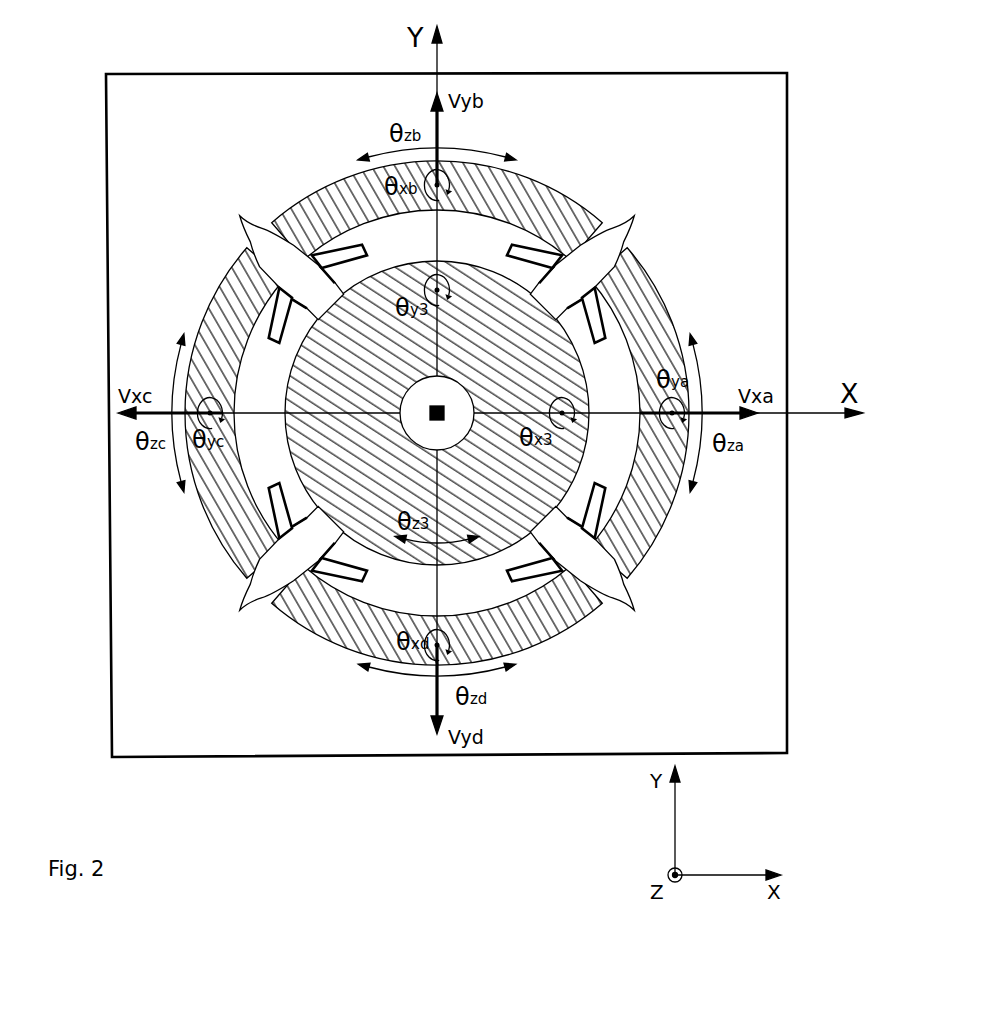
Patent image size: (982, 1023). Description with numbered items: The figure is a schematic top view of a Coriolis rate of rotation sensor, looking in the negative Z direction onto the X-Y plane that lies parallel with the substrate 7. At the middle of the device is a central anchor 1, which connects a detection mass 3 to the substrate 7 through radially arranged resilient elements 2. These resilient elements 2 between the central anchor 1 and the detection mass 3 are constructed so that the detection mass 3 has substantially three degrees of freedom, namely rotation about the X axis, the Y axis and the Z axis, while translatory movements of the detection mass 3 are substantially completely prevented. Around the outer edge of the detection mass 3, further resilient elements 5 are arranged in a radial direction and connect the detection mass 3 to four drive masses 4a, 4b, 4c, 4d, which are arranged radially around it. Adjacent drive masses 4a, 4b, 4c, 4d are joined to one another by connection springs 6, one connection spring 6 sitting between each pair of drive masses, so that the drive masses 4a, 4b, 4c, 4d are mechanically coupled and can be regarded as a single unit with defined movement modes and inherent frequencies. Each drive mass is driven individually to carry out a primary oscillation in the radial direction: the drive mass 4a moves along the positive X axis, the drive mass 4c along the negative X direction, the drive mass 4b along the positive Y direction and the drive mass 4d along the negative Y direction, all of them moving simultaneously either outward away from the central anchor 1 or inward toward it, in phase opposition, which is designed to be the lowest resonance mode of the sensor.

The central anchor 1 is at (432, 408).
The resilient elements 2 is at (441, 394).
The detection mass 3 is at (330, 400).
The drive mass 4a is at (648, 535).
The drive mass 4b is at (520, 186).
The drive mass 4c is at (228, 308).
The drive mass 4d is at (337, 623).
The resilient elements 5 is at (366, 252).
The connection springs 6 is at (252, 244).
The substrate 7 is at (446, 415).